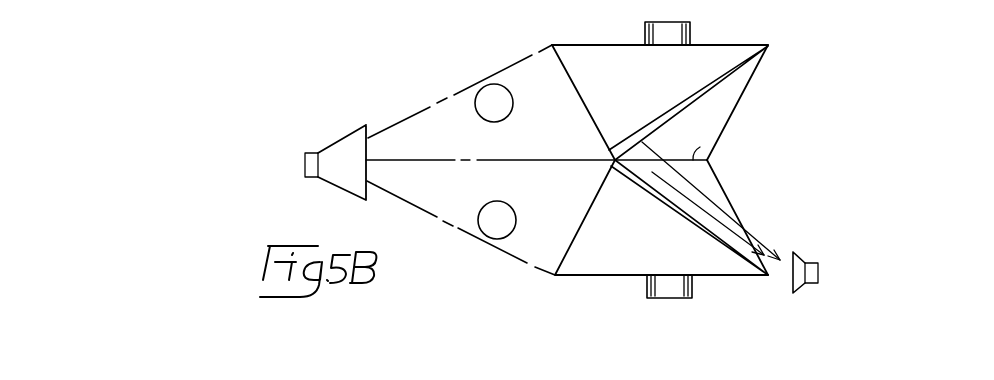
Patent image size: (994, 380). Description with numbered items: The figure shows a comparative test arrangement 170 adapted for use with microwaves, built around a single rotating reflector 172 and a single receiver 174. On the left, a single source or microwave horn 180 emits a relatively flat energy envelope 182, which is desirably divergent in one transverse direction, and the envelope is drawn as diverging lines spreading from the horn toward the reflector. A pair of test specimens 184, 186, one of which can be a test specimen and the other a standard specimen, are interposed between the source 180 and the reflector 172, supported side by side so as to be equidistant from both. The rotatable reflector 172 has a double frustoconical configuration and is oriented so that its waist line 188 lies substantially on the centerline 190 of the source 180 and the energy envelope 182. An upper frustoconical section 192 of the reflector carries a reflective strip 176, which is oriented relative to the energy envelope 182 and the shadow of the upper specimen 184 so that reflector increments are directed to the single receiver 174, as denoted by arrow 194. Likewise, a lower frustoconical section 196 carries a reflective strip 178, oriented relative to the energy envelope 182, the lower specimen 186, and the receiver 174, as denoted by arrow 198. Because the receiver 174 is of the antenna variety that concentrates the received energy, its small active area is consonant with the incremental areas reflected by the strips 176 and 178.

The comparative test arrangement 170 is at (630, 30).
The rotating reflector 172 is at (745, 45).
The receiver 174 is at (790, 258).
The reflective strip 176 is at (683, 108).
The reflective strip 178 is at (686, 204).
The microwave horn 180 is at (345, 142).
The energy envelope 182 is at (420, 206).
The test specimen 184 is at (504, 116).
The test specimen 186 is at (514, 216).
The waist line 188 is at (714, 145).
The centerline 190 is at (412, 162).
The upper frustoconical section 192 is at (743, 88).
The arrow 194 is at (702, 192).
The lower frustoconical section 196 is at (738, 222).
The arrow 198 is at (736, 246).